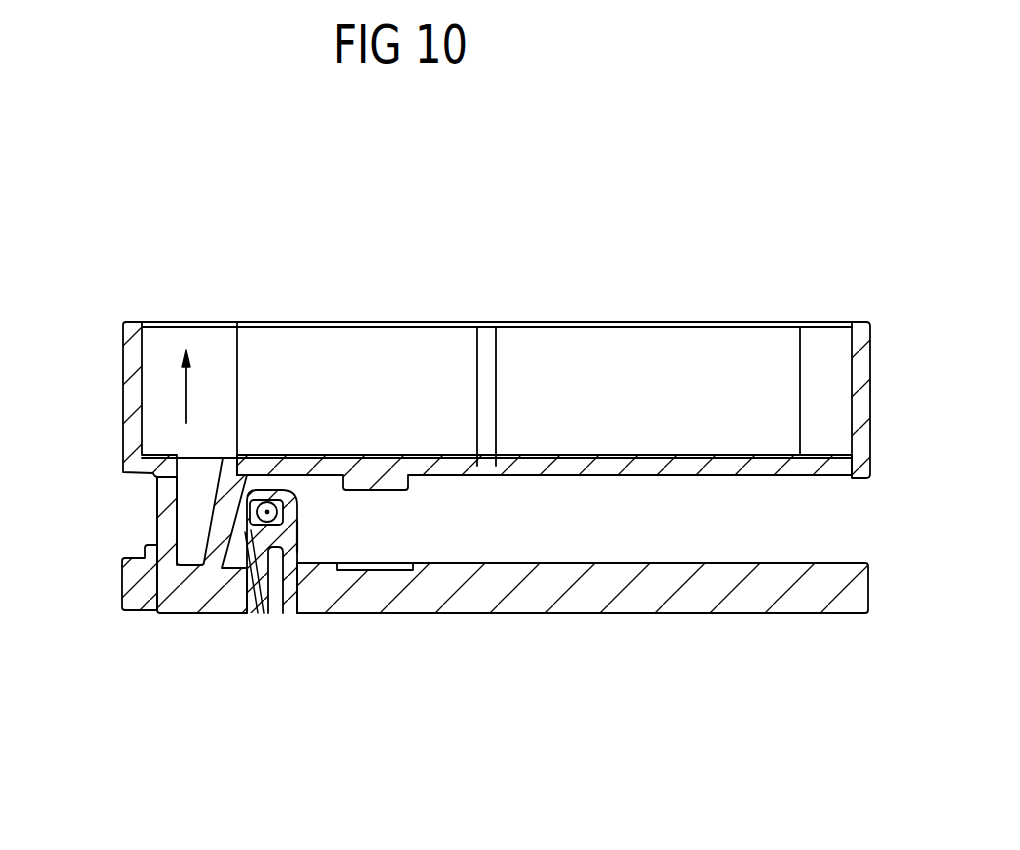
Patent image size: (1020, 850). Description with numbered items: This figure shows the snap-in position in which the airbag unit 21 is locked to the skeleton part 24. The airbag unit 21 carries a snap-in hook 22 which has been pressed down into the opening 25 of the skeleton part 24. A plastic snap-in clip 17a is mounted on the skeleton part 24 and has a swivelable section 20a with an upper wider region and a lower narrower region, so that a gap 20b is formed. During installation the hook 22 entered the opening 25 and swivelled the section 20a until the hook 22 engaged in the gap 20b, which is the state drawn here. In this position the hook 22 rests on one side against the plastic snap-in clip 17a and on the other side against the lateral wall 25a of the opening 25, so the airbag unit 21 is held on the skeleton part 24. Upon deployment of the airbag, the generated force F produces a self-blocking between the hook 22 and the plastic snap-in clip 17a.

The airbag unit 21 is at (862, 345).
The skeleton part 24 is at (640, 598).
The snap-in hook 22 is at (156, 502).
The lateral wall 25a is at (153, 568).
The opening 25 is at (276, 612).
The swivelable section 20a is at (258, 602).
The gap 20b is at (242, 613).
The plastic snap-in clip 17a is at (318, 536).